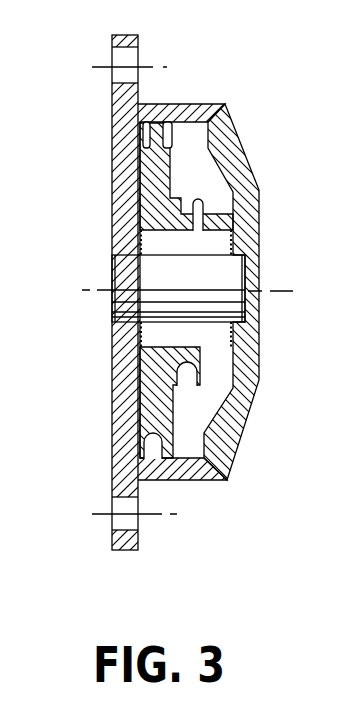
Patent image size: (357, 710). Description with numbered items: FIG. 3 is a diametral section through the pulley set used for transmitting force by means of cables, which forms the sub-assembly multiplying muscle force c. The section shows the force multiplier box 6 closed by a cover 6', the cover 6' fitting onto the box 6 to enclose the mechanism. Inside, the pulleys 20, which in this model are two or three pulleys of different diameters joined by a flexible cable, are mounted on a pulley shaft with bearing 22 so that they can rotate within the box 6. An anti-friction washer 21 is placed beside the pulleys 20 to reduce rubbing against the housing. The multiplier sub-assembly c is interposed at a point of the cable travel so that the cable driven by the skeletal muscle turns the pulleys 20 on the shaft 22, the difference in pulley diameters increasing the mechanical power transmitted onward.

The force multiplier box 6 is at (178, 295).
The cover for force multiplier box 6' is at (206, 288).
The pulleys 20 is at (158, 127).
The anti-friction washer 21 is at (236, 248).
The pulley shaft with bearing 22 is at (215, 337).
The sub-assembly multiplying muscle force c is at (88, 203).